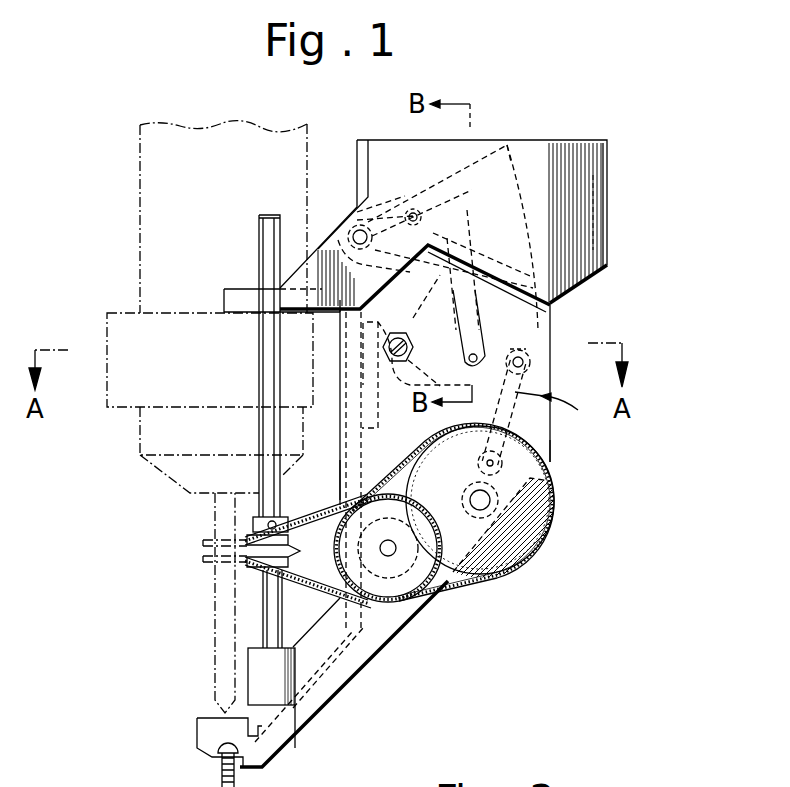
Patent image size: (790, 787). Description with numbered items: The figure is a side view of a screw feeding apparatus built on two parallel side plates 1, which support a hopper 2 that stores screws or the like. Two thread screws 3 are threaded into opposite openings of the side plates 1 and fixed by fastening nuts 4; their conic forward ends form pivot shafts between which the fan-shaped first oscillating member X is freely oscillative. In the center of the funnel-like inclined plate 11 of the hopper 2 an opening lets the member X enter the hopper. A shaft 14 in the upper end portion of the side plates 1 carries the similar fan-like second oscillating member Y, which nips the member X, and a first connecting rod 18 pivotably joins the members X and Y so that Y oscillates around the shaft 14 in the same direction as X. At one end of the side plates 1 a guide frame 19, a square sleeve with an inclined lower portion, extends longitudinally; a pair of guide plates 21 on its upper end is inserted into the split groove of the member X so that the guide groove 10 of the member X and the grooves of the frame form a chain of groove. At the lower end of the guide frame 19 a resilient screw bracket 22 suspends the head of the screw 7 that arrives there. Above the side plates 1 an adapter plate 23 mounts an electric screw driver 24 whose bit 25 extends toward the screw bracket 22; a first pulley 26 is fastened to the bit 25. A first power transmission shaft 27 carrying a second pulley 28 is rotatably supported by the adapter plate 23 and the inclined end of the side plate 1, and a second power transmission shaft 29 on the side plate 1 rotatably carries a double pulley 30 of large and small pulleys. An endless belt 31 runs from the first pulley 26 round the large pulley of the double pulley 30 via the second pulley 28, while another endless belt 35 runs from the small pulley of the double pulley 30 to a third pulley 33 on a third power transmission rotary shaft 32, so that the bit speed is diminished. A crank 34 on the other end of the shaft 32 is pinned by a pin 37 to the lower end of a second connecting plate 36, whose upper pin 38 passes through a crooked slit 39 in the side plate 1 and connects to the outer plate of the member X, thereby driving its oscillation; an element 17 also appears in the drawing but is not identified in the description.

The side plates 1 is at (550, 455).
The hopper 2 is at (607, 191).
The thread screws 3 is at (410, 334).
The fastening nuts 4 is at (414, 347).
The screw 7 is at (220, 773).
The guide groove 10 is at (477, 228).
The funnel-like inclined plate 11 is at (540, 280).
The shaft 14 is at (352, 246).
The arm 17 is at (470, 192).
The first connecting rod 18 is at (470, 313).
The guide frame 19 is at (343, 458).
The guide plates 21 is at (375, 410).
The screw bracket 22 is at (208, 737).
The adapter plate 23 is at (248, 289).
The electric screw driver 24 is at (155, 195).
The bit 25 is at (223, 652).
The first pulley 26 is at (205, 550).
The first power transmission shaft 27 is at (268, 360).
The second pulley 28 is at (260, 575).
The second power transmission shaft 29 is at (393, 554).
The double pulley 30 is at (389, 592).
The endless belt 31 is at (318, 578).
The third power transmission rotary shaft 32 is at (483, 510).
The third pulley 33 is at (540, 553).
The crank 34 is at (502, 483).
The endless belt 35 is at (454, 586).
The second connecting plate 36 is at (548, 424).
The pin 37 is at (495, 468).
The pin 38 is at (525, 362).
The crooked slit 39 is at (513, 360).
The first oscillating member X is at (581, 432).
The second oscillating member Y is at (535, 190).